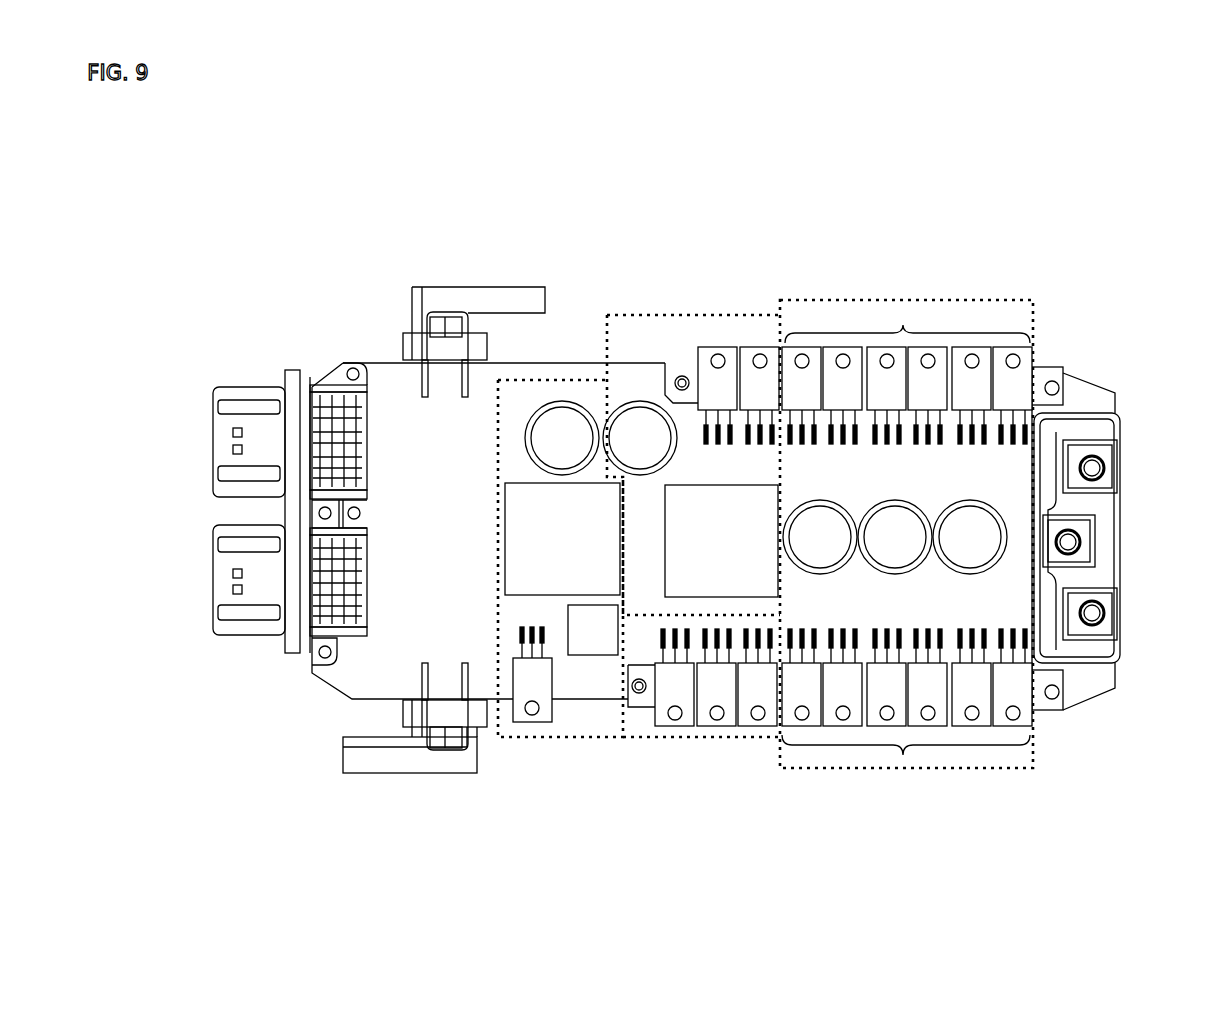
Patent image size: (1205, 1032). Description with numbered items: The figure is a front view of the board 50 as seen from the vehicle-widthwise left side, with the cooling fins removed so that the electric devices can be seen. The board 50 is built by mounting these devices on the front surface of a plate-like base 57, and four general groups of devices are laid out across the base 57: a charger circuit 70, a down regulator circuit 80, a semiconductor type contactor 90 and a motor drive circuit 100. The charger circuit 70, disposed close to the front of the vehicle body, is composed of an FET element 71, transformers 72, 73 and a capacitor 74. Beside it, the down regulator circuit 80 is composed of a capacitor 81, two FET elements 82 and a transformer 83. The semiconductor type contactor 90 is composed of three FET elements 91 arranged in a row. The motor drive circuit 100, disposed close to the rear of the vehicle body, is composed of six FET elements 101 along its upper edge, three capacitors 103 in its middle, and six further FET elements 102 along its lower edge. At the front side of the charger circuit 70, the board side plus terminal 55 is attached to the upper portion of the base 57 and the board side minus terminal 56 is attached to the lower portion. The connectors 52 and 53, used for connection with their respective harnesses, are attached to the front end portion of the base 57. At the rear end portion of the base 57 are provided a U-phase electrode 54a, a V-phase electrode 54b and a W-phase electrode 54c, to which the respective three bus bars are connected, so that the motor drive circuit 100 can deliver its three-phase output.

The board 50 is at (663, 495).
The connector 52 is at (212, 440).
The connector 53 is at (212, 587).
The U-phase electrode 54a is at (1102, 468).
The V-phase electrode 54b is at (1080, 543).
The W-phase electrode 54c is at (1102, 618).
The board side plus terminal 55 is at (485, 300).
The board side minus terminal 56 is at (400, 760).
The base 57 is at (352, 668).
The charger circuit 70 is at (553, 740).
The FET element 71 is at (527, 735).
The transformer 72 is at (592, 640).
The transformer 73 is at (523, 507).
The capacitor 74 is at (570, 440).
The down regulator circuit 80 is at (727, 315).
The capacitor 81 is at (640, 433).
The FET element 82 is at (755, 345).
The transformer 83 is at (687, 517).
The semiconductor type contactor 90 is at (683, 740).
The FET element 91 is at (750, 730).
The motor drive circuit 100 is at (838, 768).
The FET element 101 is at (903, 325).
The FET element 102 is at (912, 760).
The capacitor 103 is at (970, 525).